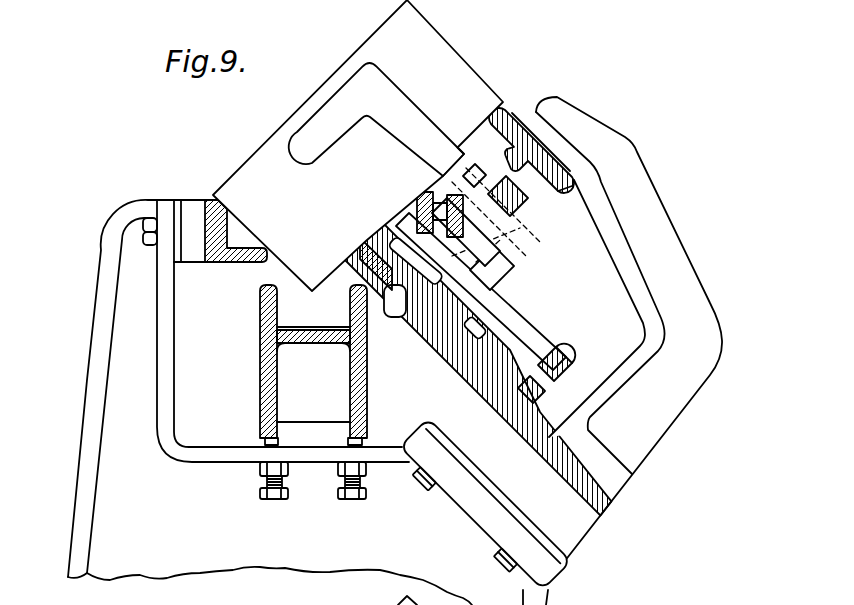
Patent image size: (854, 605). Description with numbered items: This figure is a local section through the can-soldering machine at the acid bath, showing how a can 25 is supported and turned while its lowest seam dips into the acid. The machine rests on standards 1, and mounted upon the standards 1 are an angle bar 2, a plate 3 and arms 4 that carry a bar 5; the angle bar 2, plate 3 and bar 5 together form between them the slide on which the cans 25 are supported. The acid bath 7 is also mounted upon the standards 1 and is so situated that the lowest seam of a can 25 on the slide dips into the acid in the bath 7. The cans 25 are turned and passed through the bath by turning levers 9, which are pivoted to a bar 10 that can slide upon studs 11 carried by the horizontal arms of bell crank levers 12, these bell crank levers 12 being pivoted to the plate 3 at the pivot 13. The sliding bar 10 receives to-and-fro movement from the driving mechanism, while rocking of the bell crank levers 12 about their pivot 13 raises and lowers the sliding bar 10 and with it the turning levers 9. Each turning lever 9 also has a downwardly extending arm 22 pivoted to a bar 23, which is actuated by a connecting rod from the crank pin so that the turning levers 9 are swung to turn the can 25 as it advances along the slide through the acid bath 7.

The standards 1 is at (100, 515).
The angle bar 2 is at (218, 252).
The plate 3 is at (516, 420).
The arms 4 is at (667, 260).
The bar 5 is at (510, 113).
The acid bath 7 is at (296, 305).
The turning levers 9 is at (327, 122).
The sliding bar 10 is at (477, 240).
The studs 11 is at (430, 220).
The bell crank levers 12 is at (425, 243).
The pivot 13 is at (476, 283).
The downwardly extending arms 22 is at (490, 200).
The bar 23 is at (562, 187).
The cans 25 is at (265, 173).